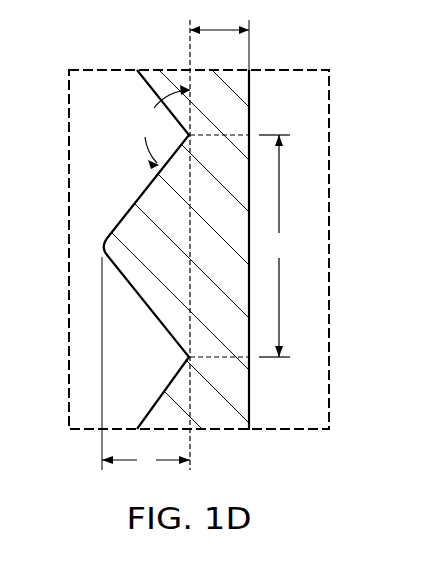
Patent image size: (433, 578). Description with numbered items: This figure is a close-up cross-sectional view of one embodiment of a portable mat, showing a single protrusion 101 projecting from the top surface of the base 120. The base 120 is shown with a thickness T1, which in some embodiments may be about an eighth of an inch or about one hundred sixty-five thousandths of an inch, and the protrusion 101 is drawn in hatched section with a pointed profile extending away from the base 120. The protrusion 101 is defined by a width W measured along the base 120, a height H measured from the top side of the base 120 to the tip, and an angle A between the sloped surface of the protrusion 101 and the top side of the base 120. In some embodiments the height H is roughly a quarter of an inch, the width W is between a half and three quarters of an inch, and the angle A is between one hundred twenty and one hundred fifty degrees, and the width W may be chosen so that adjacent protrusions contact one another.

The protrusion 101 is at (124, 224).
The base 120 is at (243, 117).
The angle A is at (165, 127).
The thickness T1 is at (219, 17).
The width W is at (275, 246).
The height H is at (146, 460).